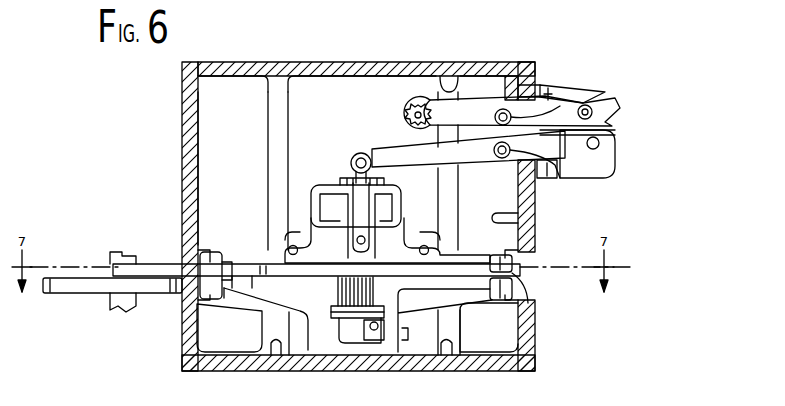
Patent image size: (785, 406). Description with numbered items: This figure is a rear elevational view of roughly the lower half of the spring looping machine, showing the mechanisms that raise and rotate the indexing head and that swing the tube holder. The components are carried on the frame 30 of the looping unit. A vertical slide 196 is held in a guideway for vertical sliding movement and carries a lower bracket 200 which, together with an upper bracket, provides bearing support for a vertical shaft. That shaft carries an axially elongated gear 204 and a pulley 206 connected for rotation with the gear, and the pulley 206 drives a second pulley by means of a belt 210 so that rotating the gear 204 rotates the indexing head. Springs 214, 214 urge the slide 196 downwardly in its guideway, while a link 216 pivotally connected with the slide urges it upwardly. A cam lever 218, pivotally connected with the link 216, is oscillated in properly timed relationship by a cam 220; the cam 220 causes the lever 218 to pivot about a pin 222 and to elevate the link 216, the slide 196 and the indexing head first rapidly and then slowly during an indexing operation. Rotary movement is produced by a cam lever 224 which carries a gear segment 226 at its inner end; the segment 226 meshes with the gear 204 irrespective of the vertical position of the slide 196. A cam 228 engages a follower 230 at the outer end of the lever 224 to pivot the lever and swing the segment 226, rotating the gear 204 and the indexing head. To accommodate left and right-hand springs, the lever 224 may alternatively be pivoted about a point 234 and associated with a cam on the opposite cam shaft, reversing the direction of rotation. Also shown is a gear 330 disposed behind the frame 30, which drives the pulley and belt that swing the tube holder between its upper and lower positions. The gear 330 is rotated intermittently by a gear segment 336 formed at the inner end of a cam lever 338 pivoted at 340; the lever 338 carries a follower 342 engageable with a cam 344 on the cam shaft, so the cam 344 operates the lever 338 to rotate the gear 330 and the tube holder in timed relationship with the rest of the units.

The frame 30 is at (348, 63).
The vertical slide 196 is at (292, 232).
The lower bracket 200 is at (348, 343).
The axially elongated gear 204 is at (420, 280).
The pulley 206 is at (345, 312).
The belt 210 is at (376, 332).
The springs 214 is at (402, 215).
The link 216 is at (352, 176).
The cam lever 218 is at (478, 160).
The cam 220 is at (610, 166).
The pin 222 is at (556, 176).
The cam lever 224 is at (222, 262).
The gear segment 226 is at (312, 284).
The cam 228 is at (92, 286).
The follower 230 is at (124, 262).
The alternative pivot point 234 is at (530, 300).
The gear 330 is at (412, 128).
The gear segment 336 is at (430, 110).
The cam lever 338 is at (488, 110).
The pivot 340 is at (545, 86).
The follower 342 is at (614, 104).
The cam 344 is at (600, 94).